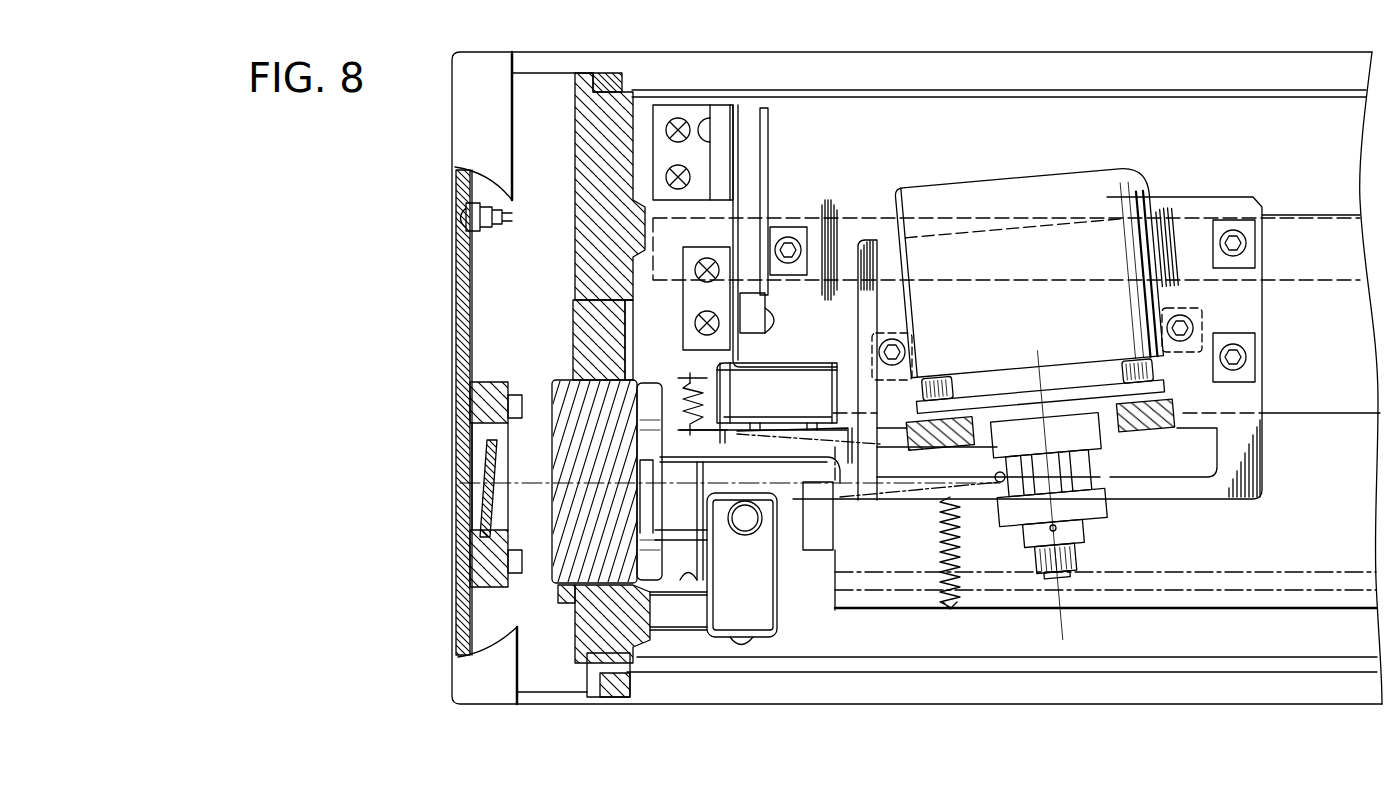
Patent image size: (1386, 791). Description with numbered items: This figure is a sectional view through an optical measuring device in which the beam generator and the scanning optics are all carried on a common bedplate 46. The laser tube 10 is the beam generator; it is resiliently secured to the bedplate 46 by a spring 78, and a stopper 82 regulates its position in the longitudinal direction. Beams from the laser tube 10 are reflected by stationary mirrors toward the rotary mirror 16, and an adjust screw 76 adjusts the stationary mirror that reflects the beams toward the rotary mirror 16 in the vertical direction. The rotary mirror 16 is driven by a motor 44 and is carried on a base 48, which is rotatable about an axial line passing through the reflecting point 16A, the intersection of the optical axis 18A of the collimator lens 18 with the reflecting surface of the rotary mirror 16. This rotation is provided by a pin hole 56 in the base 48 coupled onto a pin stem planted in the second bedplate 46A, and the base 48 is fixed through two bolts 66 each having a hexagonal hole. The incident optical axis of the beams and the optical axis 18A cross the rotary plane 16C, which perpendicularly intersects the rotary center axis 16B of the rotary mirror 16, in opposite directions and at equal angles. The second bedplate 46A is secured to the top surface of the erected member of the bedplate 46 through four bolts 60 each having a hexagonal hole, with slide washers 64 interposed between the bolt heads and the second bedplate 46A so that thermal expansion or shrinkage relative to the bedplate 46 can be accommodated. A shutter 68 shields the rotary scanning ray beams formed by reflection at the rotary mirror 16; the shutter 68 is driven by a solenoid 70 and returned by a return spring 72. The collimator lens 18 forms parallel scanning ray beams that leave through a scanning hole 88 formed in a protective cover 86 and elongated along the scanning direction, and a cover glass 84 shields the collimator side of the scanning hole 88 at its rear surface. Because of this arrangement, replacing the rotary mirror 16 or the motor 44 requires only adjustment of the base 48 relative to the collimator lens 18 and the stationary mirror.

The laser tube 10 is at (1193, 580).
The rotary mirror 16 is at (1103, 473).
The reflecting point 16A is at (993, 476).
The rotary center axis 16B is at (1058, 608).
The rotary plane 16C is at (1142, 462).
The collimator lens 18 is at (552, 575).
The optical axis 18A is at (706, 483).
The motor 44 is at (1037, 183).
The bedplate 46 is at (838, 690).
The second bedplate 46A is at (1178, 200).
The base 48 is at (890, 238).
The pin hole 56 is at (1000, 487).
The bolts with hexagonal hole 60 is at (788, 232).
The slide washers 64 is at (802, 230).
The bolts with hexagonal hole 66 is at (1195, 315).
The shutter 68 is at (848, 418).
The solenoid 70 is at (813, 385).
The return spring 72 is at (683, 398).
The adjust screw 76 is at (743, 532).
The spring 78 is at (946, 547).
The stopper 82 is at (812, 555).
The cover glass 84 is at (496, 468).
The protective cover 86 is at (463, 347).
The scanning hole 88 is at (467, 463).